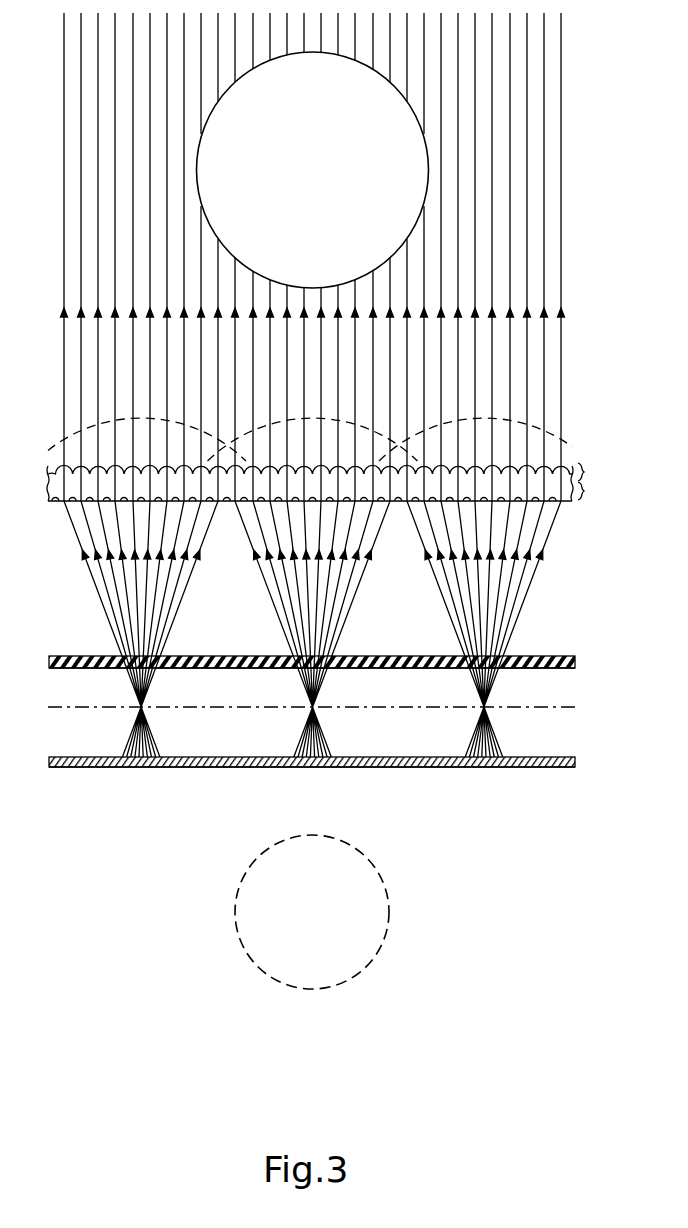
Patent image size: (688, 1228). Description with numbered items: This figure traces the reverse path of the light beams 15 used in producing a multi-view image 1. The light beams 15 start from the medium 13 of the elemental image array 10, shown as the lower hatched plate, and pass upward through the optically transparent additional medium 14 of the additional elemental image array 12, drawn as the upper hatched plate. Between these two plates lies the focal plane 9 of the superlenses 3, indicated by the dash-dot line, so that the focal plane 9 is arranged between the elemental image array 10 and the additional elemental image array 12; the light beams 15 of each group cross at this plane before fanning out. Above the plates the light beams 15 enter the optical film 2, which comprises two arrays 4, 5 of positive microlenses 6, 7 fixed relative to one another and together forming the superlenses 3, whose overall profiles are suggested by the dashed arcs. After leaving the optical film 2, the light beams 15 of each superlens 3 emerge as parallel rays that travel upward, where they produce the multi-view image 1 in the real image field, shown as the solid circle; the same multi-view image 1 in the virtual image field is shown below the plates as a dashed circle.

The multi-view image 1 is at (233, 83).
The optical film 2 is at (60, 503).
The superlens 3 is at (322, 418).
The first array of positive microlenses 4 is at (591, 476).
The second array of positive microlenses 5 is at (591, 495).
The positive microlens 6 is at (535, 471).
The positive microlens 7 is at (427, 502).
The focal plane 9 is at (217, 708).
The elemental image array 10 is at (370, 757).
The additional elemental image array 12 is at (406, 656).
The medium of elemental image array 13 is at (243, 768).
The optically transparent additional medium 14 is at (216, 668).
The light beams 15 is at (100, 600).